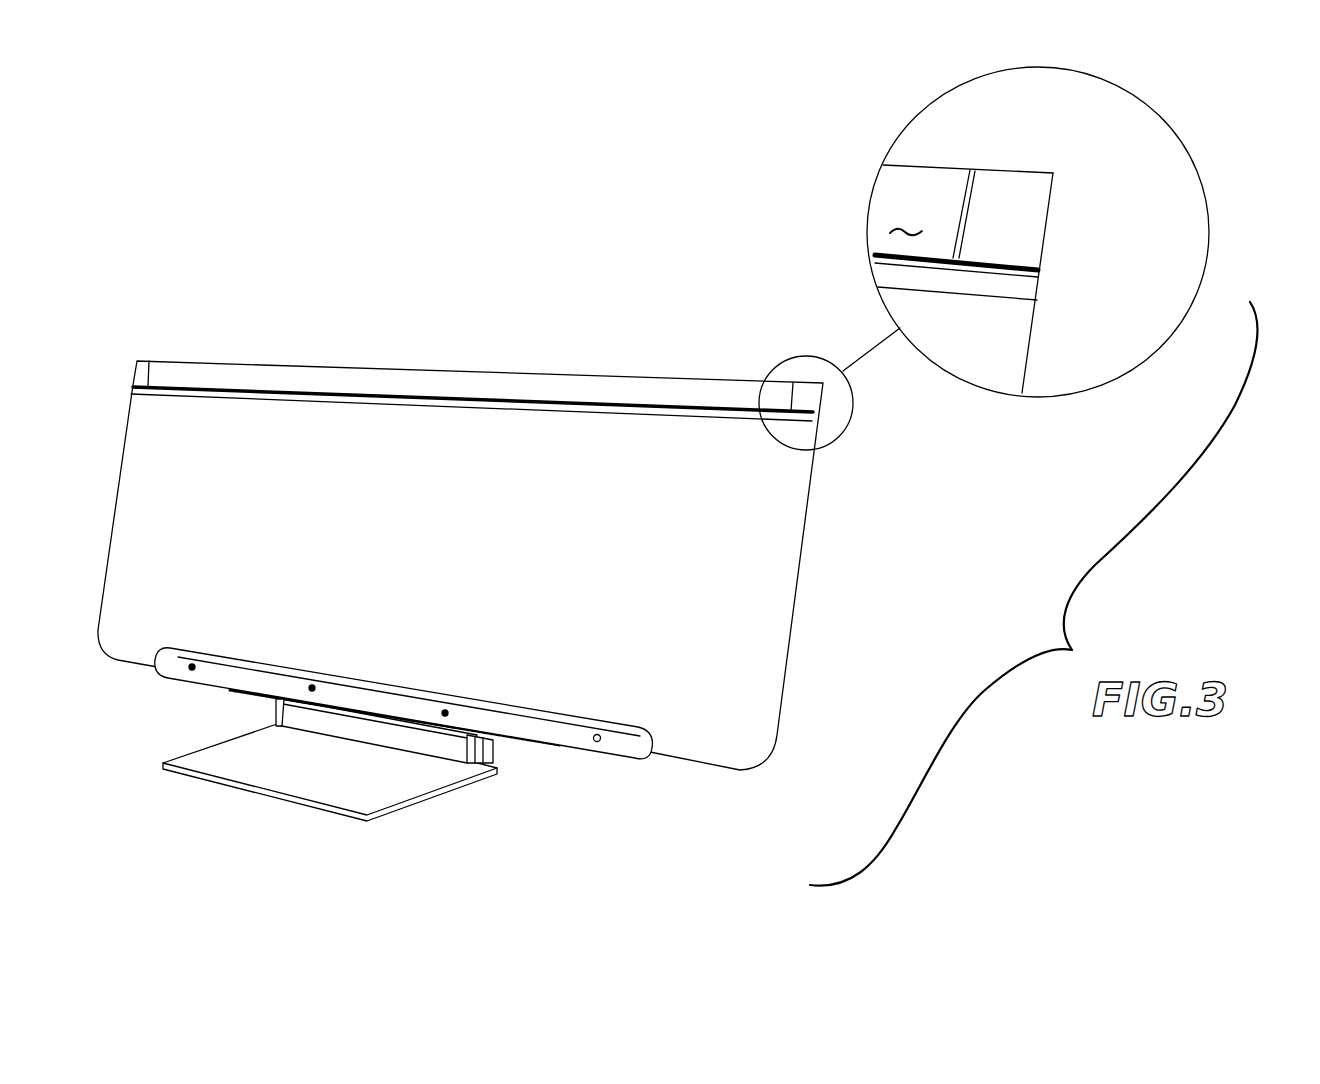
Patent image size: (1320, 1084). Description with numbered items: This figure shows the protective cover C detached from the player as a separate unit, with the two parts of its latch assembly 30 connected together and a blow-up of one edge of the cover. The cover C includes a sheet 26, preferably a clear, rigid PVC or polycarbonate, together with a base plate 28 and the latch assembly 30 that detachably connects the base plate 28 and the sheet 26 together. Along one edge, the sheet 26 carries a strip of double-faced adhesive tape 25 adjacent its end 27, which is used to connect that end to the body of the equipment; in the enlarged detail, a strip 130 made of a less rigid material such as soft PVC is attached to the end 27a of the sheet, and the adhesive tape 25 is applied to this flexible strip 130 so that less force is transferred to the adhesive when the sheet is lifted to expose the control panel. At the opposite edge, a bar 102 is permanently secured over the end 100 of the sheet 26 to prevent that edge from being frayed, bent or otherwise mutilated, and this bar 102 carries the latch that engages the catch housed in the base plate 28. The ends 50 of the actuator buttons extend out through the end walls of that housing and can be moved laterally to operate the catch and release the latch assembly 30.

The adhesive tape 25 is at (473, 384).
The sheet 26 is at (496, 535).
The end of sheet 27 is at (1028, 244).
The end of sheet 27a is at (1041, 292).
The base plate 28 is at (421, 794).
The latch assembly 30 is at (309, 736).
The ends of the buttons 50 is at (270, 704).
The end of sheet 100 is at (502, 573).
The bar 102 is at (471, 710).
The strip 130 is at (1028, 215).
The protective cover C is at (502, 535).